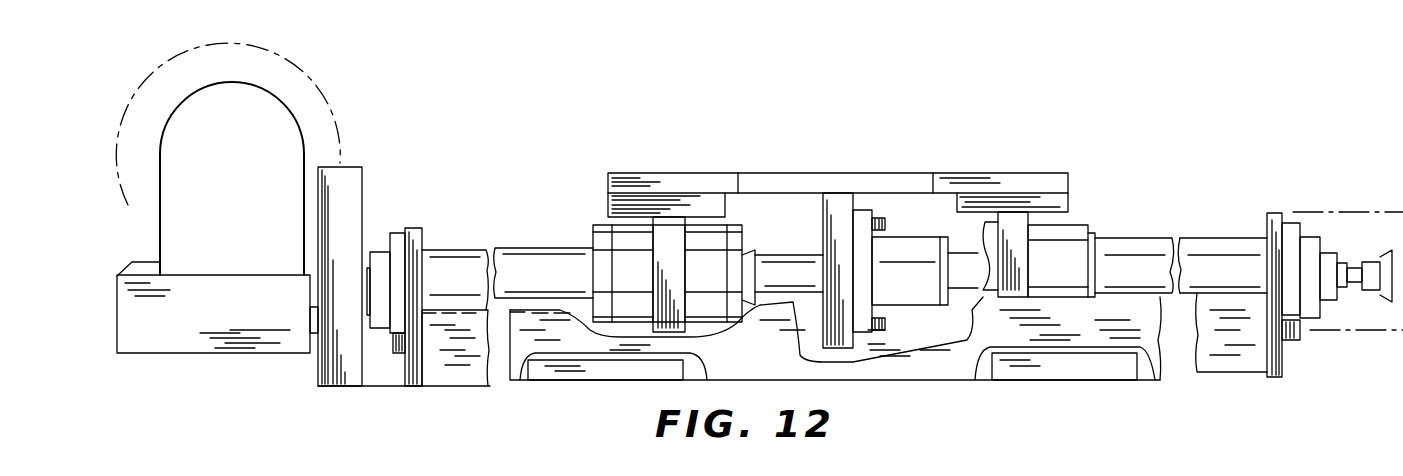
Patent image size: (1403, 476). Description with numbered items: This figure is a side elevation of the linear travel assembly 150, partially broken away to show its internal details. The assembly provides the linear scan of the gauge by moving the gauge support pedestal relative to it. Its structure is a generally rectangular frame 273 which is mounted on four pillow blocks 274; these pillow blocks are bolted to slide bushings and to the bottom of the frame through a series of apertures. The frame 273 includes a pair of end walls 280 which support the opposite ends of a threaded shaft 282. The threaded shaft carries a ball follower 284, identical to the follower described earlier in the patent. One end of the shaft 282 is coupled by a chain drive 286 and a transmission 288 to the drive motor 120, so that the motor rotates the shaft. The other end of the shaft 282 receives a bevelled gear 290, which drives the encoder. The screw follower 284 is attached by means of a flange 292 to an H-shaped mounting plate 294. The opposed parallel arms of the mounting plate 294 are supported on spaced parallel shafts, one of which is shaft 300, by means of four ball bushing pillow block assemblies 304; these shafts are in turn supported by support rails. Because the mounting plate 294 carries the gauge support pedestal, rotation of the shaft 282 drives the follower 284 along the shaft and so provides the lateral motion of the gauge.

The drive motor 120 is at (336, 88).
The linear travel assembly 150 is at (518, 239).
The frame 273 is at (450, 388).
The pillow blocks 274 is at (588, 377).
The end walls 280 is at (412, 228).
The threaded shaft 282 is at (812, 255).
The ball follower 284 is at (815, 223).
The chain drive 286 is at (362, 168).
The transmission 288 is at (258, 302).
The bevelled gear 290 is at (1366, 262).
The flange 292 is at (866, 343).
The mounting plate 294 is at (868, 168).
The shaft 300 is at (564, 288).
The ball bushing pillow block assemblies 304 is at (690, 333).